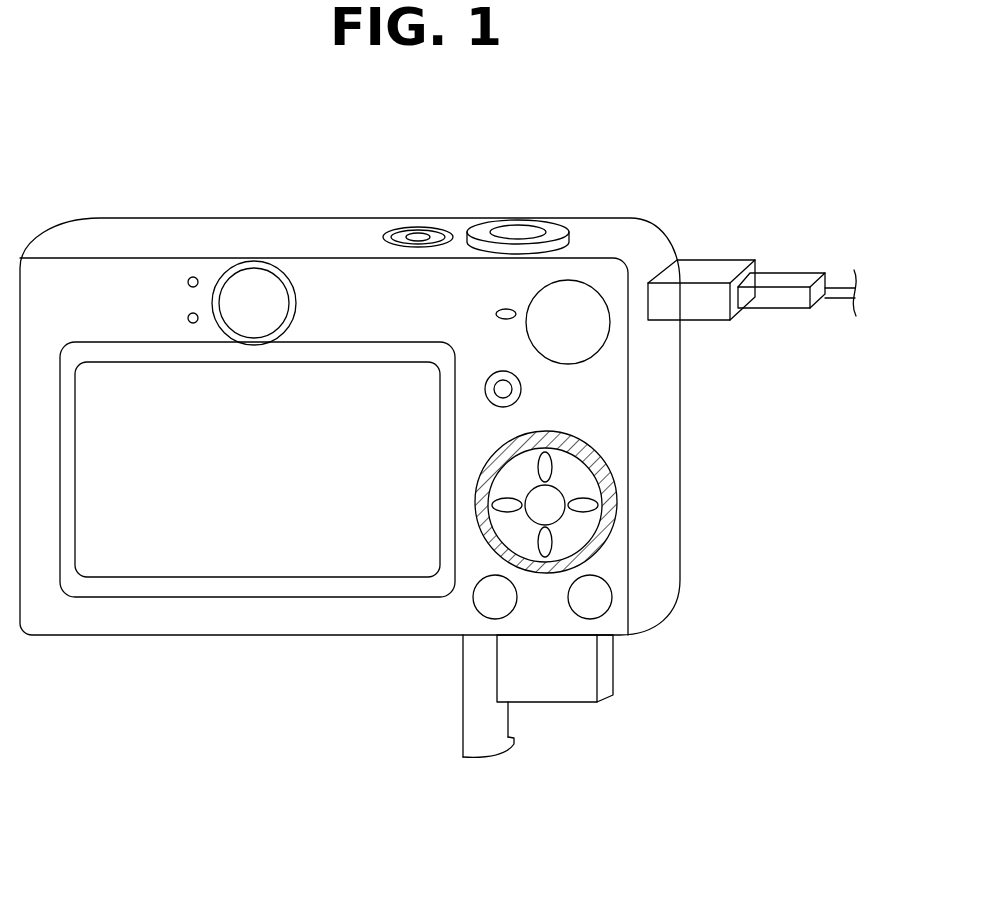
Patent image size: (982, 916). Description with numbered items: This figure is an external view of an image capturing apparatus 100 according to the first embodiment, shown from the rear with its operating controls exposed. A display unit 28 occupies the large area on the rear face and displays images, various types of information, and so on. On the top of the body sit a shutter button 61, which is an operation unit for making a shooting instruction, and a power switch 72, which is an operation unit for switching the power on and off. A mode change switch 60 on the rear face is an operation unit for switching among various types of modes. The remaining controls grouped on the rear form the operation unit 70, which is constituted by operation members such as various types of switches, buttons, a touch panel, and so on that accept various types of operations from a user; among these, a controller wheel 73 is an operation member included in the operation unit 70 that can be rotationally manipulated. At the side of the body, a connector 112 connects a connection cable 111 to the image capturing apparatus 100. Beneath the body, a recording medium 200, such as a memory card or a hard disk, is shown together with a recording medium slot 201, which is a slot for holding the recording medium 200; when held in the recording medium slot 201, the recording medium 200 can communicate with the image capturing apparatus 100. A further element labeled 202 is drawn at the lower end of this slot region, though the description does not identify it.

The image capturing apparatus 100 is at (113, 675).
The display unit 28 is at (143, 378).
The power switch 72 is at (418, 233).
The shutter button 61 is at (517, 230).
The operation unit 70 is at (570, 240).
The mode change switch 60 is at (595, 340).
The controller wheel 73 is at (512, 442).
The connector 112 is at (705, 272).
The connection cable 111 is at (785, 284).
The recording medium 200 is at (570, 693).
The recording medium slot 201 is at (517, 636).
The lid of recording medium slot 202 is at (488, 760).